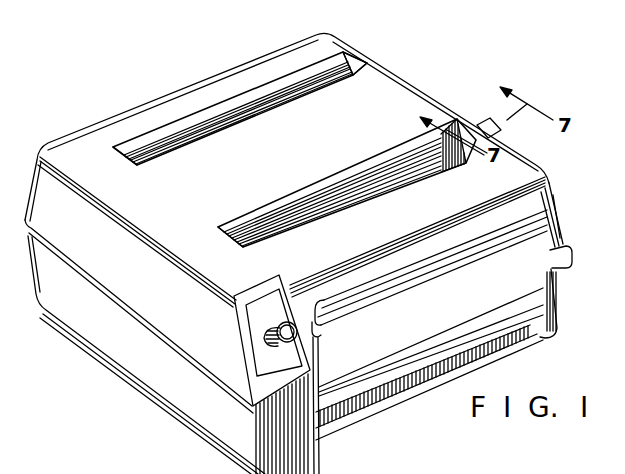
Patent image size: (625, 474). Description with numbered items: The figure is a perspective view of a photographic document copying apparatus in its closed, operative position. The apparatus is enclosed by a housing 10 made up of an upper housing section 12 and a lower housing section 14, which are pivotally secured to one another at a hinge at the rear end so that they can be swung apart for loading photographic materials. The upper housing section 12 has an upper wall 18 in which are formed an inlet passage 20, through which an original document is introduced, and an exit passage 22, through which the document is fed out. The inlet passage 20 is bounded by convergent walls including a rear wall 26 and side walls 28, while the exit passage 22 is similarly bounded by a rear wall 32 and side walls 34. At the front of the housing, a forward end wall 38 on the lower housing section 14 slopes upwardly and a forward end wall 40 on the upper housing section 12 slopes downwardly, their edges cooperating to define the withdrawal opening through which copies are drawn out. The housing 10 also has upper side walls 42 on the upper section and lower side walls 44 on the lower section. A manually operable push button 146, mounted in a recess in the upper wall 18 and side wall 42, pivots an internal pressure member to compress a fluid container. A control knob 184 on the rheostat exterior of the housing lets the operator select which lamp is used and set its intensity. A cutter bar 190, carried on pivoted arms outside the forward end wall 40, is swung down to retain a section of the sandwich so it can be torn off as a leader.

The housing 10 is at (308, 245).
The upper housing section 12 is at (308, 214).
The lower housing section 14 is at (292, 355).
The upper wall 18 is at (299, 152).
The inlet passage 20 is at (200, 140).
The exit passage 22 is at (300, 205).
The rear wall 26 is at (133, 147).
The side walls 28 is at (357, 66).
The rear wall 32 is at (247, 228).
The side walls 34 is at (462, 132).
The forward end wall 38 is at (340, 417).
The forward end wall 40 is at (528, 197).
The upper side walls 42 is at (124, 253).
The lower side walls 44 is at (158, 357).
The push button 146 is at (490, 120).
The control knob 184 is at (264, 333).
The cutter bar 190 is at (445, 314).